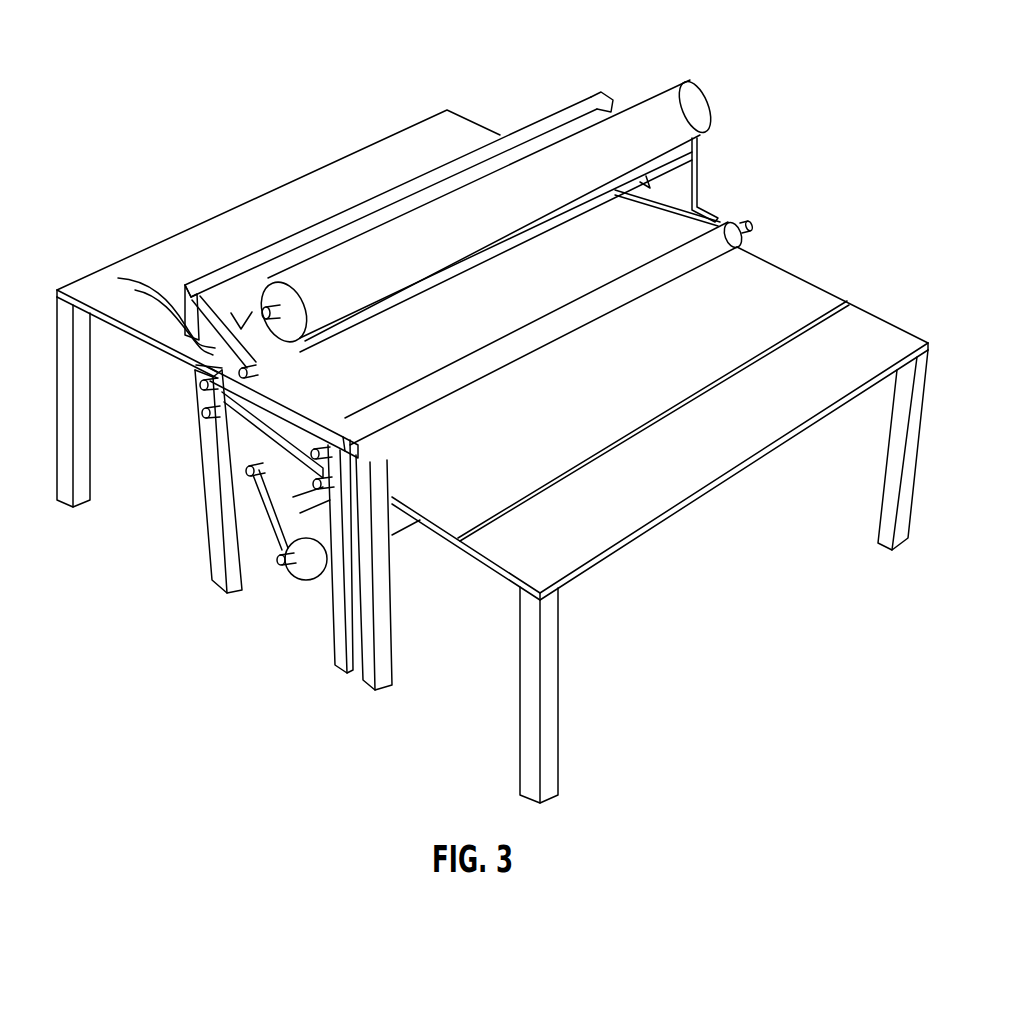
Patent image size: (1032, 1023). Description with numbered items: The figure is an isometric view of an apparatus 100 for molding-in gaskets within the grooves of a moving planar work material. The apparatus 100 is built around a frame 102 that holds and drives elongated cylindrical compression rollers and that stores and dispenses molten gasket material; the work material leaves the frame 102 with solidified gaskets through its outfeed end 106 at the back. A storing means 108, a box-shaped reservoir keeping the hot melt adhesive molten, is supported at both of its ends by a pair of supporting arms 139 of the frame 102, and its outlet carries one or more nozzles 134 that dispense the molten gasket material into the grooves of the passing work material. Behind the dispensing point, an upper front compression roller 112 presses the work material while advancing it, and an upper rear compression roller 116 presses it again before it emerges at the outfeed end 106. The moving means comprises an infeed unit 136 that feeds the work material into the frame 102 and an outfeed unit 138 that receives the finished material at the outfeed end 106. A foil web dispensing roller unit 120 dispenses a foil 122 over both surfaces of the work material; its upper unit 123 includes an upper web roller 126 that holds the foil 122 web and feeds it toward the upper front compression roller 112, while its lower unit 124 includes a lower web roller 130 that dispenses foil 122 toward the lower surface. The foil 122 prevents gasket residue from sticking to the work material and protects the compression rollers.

The apparatus 100 is at (203, 27).
The frame 102 is at (678, 167).
The outfeed end 106 is at (591, 316).
The storing means 108 is at (579, 120).
The upper front compression roller 112 is at (210, 362).
The upper rear compression roller 116 is at (727, 231).
The foil web dispensing roller unit 120 is at (711, 77).
The foil 122 is at (813, 291).
The upper unit 123 is at (692, 123).
The lower unit 124 is at (331, 527).
The upper web roller 126 is at (523, 183).
The lower web roller 130 is at (310, 565).
The nozzles 134 is at (115, 278).
The infeed unit 136 is at (232, 235).
The outfeed unit 138 is at (662, 525).
The supporting arms 139 is at (193, 300).